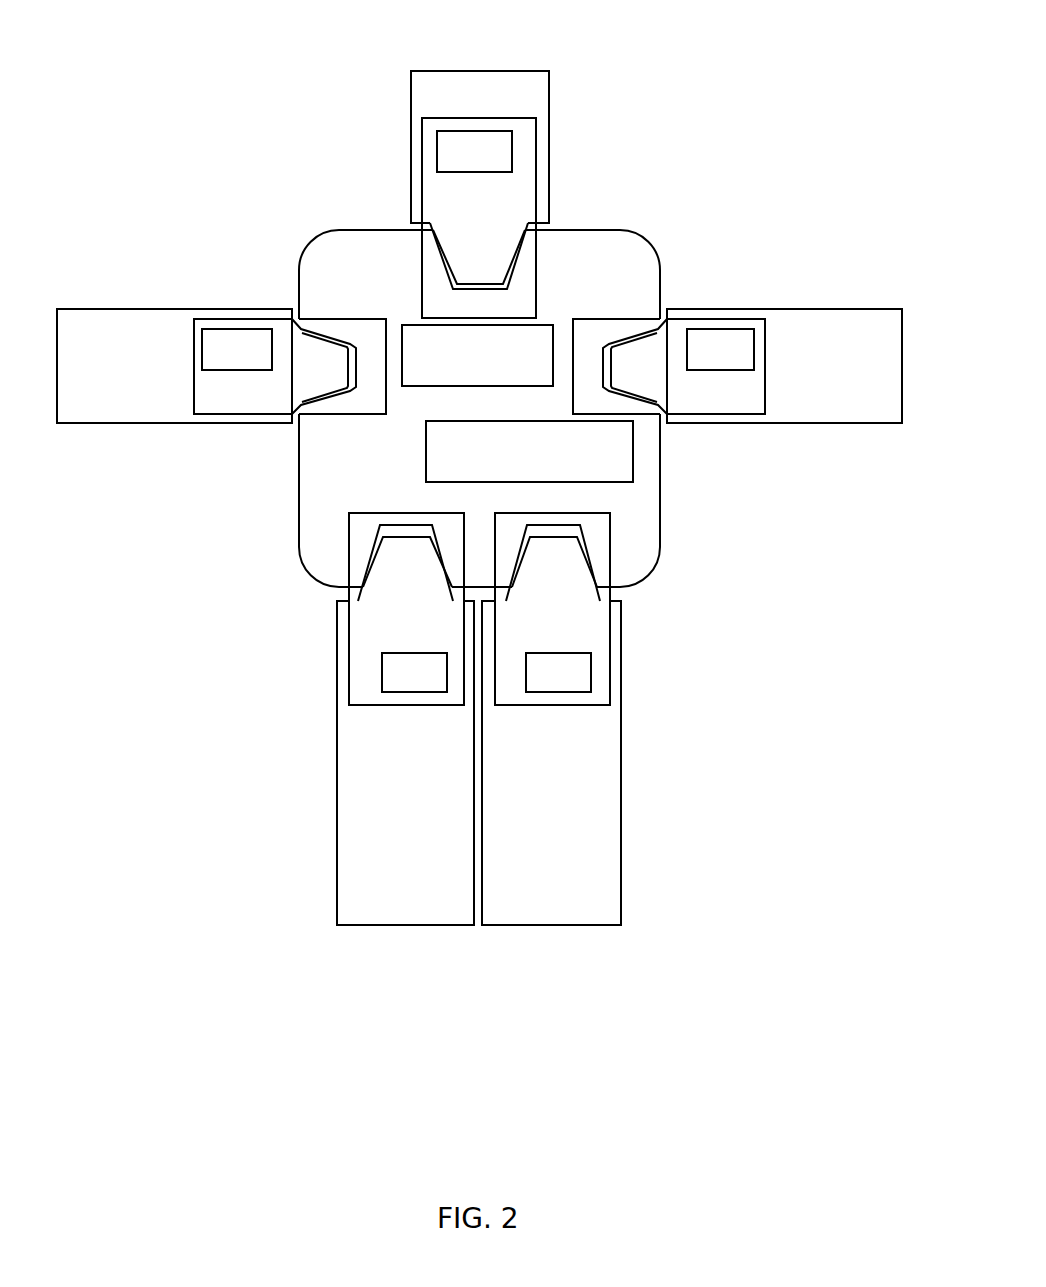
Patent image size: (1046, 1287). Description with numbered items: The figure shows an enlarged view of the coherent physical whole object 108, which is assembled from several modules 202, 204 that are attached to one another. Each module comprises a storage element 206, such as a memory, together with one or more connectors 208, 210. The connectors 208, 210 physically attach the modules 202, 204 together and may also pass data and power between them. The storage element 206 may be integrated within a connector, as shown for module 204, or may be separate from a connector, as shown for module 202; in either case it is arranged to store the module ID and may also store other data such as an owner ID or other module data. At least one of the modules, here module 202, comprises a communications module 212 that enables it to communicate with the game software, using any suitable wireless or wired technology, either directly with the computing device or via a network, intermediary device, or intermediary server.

The coherent physical whole object 108 is at (648, 82).
The module 202 is at (648, 240).
The module 204 is at (470, 71).
The storage element 206 is at (272, 347).
The connector 208 is at (333, 313).
The connector 210 is at (193, 398).
The communications module 212 is at (503, 482).